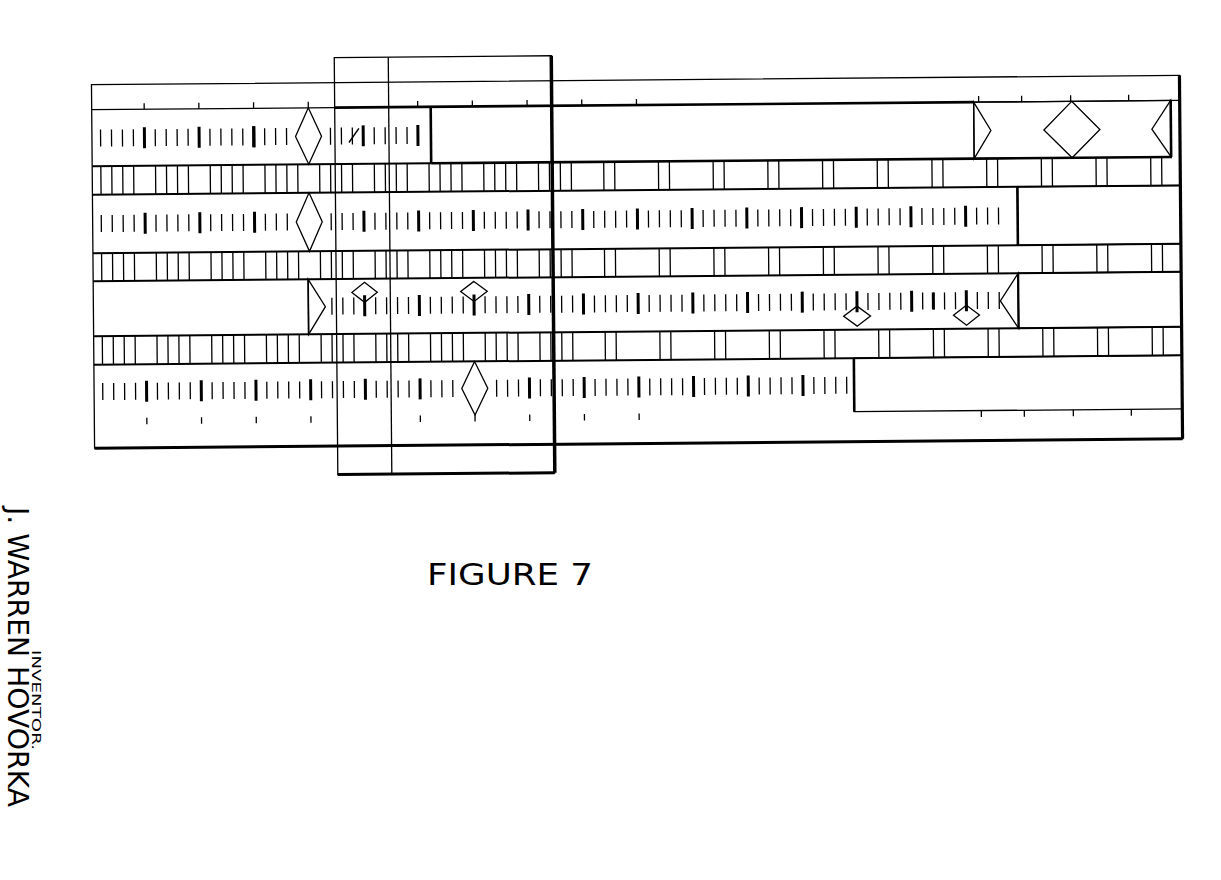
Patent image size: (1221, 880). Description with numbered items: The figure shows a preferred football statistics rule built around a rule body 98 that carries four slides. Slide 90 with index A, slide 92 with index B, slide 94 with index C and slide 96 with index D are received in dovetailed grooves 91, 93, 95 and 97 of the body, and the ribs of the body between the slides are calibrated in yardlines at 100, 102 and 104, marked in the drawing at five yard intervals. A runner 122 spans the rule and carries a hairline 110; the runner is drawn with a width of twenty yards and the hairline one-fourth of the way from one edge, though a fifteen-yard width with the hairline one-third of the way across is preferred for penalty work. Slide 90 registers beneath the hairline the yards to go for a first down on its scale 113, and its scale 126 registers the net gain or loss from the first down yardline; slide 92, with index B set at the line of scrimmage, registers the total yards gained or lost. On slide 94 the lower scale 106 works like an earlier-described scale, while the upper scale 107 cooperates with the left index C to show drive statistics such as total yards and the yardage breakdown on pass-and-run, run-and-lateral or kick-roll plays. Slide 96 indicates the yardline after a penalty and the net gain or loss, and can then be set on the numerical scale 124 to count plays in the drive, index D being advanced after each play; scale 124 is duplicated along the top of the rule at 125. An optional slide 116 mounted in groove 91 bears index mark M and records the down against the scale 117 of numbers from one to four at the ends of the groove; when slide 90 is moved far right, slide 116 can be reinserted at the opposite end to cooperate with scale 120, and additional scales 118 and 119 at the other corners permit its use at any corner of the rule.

The slide 90 is at (93, 126).
The dovetailed groove 91 is at (702, 144).
The slide 92 is at (93, 219).
The dovetailed groove 93 is at (1098, 215).
The slide 94 is at (301, 300).
The dovetailed groove 95 is at (1099, 300).
The slide 96 is at (93, 383).
The dovetailed groove 97 is at (1018, 383).
The rule body 98 is at (629, 88).
The yardline calibration 100 is at (93, 177).
The yardline calibration 102 is at (93, 270).
The yardline calibration 104 is at (93, 357).
The lower scale 106 is at (933, 317).
The upper scale 107 is at (988, 283).
The hairline 110 is at (390, 465).
The scale 113 is at (356, 118).
The optional slide 116 is at (1017, 128).
The scale 117 is at (962, 84).
The additional scale 118 is at (228, 440).
The additional scale 119 is at (1097, 428).
The scale 120 is at (190, 84).
The runner 122 is at (552, 475).
The numerical scale 124 is at (610, 430).
The duplicate scale 125 is at (499, 92).
The scale 126 is at (284, 120).